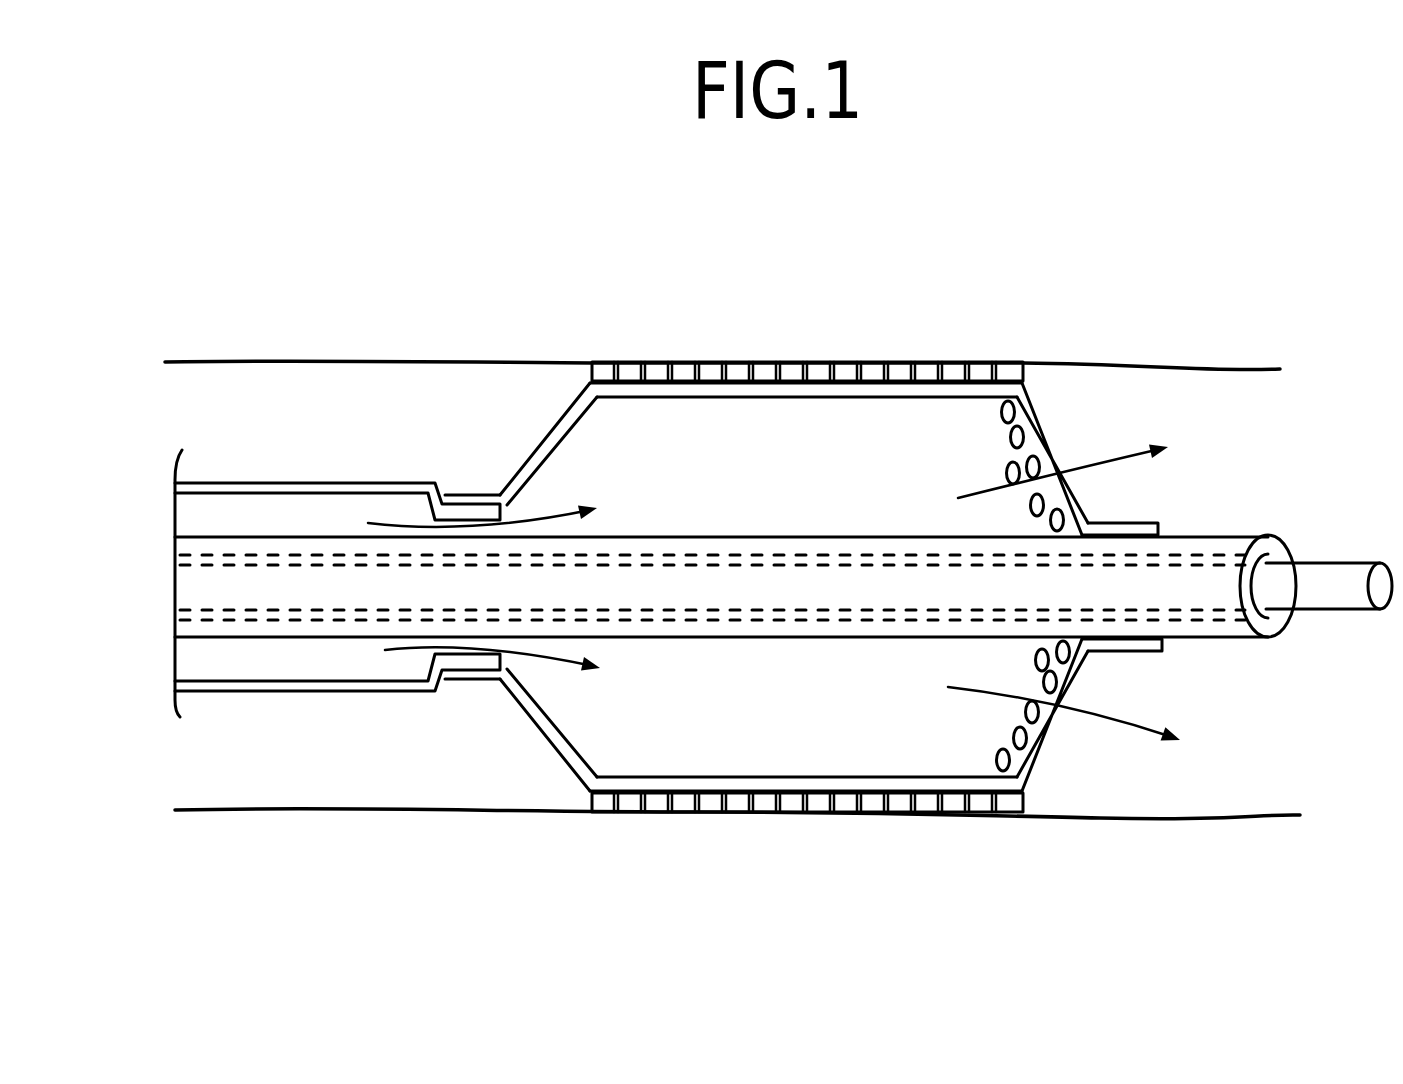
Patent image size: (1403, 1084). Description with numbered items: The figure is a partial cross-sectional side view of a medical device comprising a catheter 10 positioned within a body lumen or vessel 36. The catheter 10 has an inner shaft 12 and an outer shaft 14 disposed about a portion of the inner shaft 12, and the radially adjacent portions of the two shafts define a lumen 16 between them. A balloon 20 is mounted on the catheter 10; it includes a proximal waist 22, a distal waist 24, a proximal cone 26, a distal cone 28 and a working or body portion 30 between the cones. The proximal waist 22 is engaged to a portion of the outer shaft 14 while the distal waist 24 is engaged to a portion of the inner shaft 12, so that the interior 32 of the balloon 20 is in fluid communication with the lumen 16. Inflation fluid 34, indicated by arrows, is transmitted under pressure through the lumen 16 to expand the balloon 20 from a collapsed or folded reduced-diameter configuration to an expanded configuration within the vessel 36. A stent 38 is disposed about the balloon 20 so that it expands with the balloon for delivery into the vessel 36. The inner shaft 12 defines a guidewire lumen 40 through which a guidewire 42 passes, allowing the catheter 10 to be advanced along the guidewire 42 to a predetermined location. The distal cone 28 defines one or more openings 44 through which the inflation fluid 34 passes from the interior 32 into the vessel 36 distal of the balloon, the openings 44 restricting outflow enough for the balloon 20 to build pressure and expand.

The catheter 10 is at (455, 398).
The inner shaft 12 is at (253, 540).
The outer shaft 14 is at (380, 697).
The lumen 16 is at (260, 663).
The balloon 20 is at (945, 360).
The proximal waist 22 is at (467, 683).
The distal waist 24 is at (1157, 530).
The proximal cone 26 is at (567, 417).
The distal cone 28 is at (1050, 738).
The working or body portion 30 is at (793, 363).
The interior 32 is at (870, 420).
The inflation fluid 34 is at (413, 525).
The body lumen or vessel 36 is at (1263, 388).
The stent 38 is at (730, 815).
The guidewire lumen 40 is at (652, 603).
The guidewire 42 is at (900, 592).
The openings 44 is at (1095, 652).